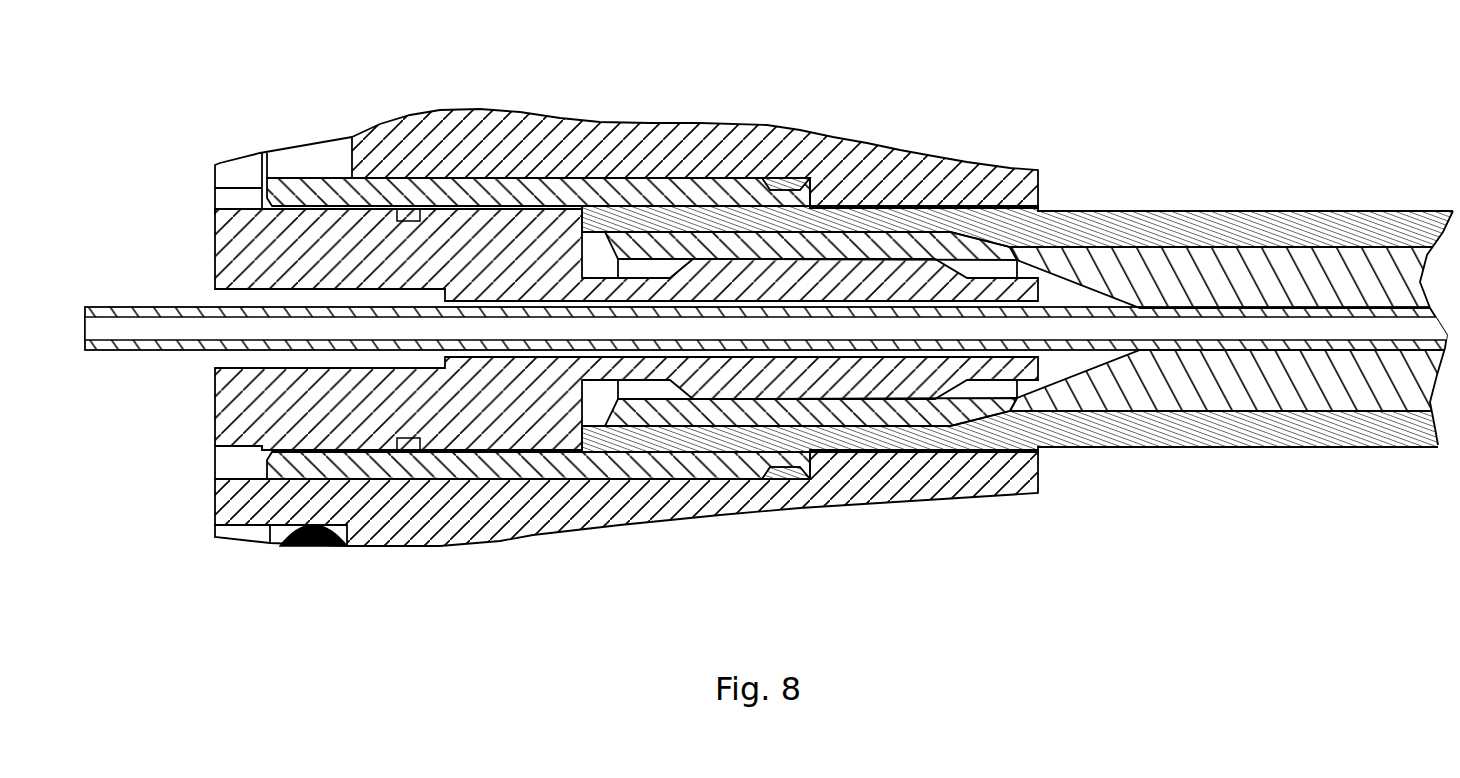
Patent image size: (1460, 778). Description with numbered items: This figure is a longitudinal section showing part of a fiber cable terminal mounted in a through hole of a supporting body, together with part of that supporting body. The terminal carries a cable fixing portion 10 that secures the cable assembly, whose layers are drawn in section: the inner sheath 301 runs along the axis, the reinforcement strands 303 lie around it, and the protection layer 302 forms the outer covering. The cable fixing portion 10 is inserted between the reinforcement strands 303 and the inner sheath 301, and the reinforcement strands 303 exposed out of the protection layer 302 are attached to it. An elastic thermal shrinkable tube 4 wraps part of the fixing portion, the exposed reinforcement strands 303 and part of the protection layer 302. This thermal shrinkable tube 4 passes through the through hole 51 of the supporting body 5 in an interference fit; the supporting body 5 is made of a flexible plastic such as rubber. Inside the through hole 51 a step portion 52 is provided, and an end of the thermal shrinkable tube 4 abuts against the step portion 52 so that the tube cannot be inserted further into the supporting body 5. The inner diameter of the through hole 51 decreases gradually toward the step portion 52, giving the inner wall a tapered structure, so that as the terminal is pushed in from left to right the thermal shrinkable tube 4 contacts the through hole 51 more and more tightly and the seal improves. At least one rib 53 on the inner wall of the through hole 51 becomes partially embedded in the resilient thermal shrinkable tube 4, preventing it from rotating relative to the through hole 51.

The thermal shrinkable tube 4 is at (485, 190).
The supporting body 5 is at (477, 525).
The cable fixing portion 10 is at (238, 237).
The through hole 51 is at (233, 462).
The step portion 52 is at (848, 143).
The rib 53 is at (787, 185).
The inner sheath 301 is at (148, 332).
The protection layer 302 is at (1200, 228).
The reinforcement strands 303 is at (910, 245).